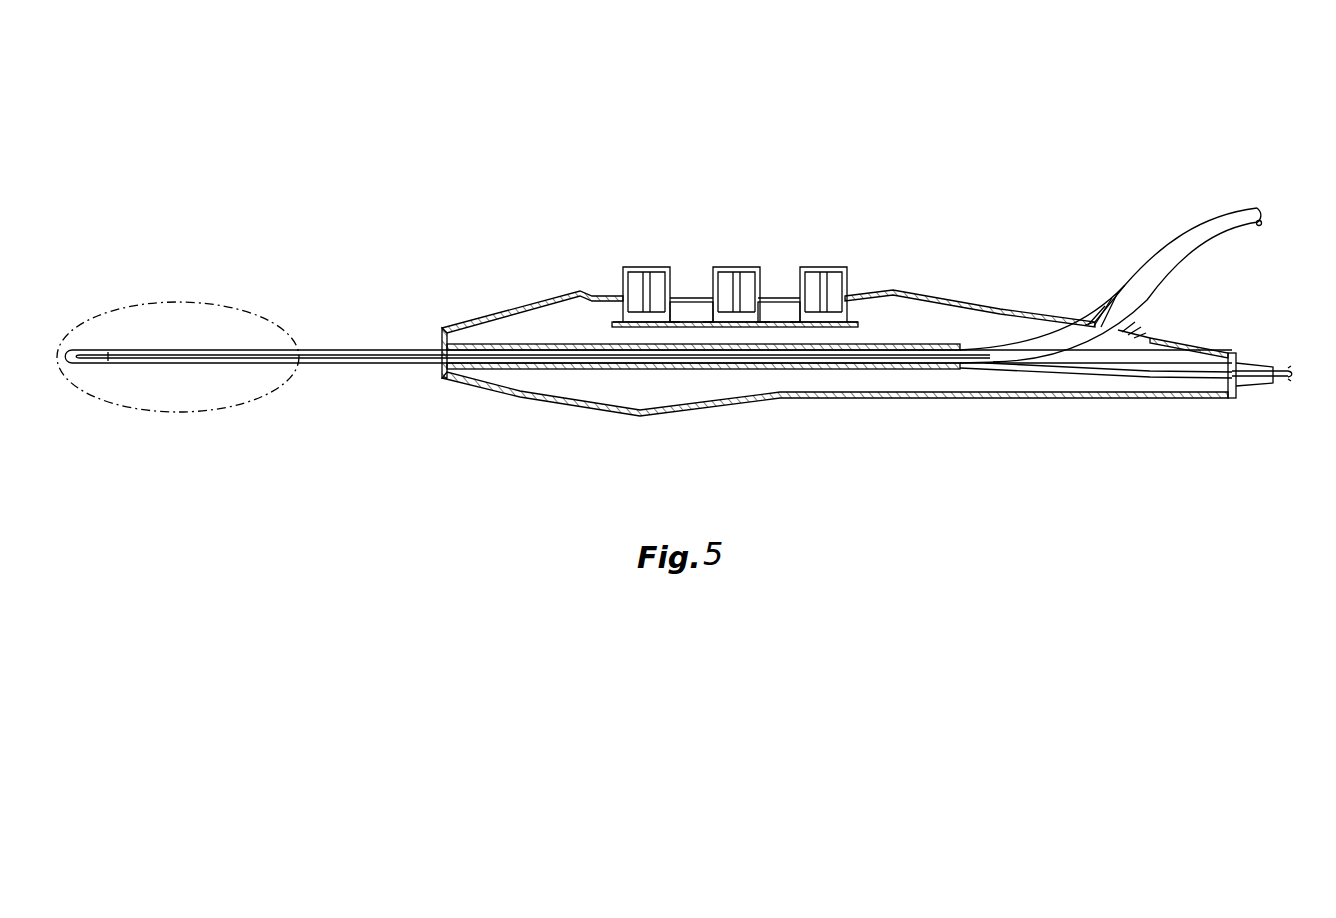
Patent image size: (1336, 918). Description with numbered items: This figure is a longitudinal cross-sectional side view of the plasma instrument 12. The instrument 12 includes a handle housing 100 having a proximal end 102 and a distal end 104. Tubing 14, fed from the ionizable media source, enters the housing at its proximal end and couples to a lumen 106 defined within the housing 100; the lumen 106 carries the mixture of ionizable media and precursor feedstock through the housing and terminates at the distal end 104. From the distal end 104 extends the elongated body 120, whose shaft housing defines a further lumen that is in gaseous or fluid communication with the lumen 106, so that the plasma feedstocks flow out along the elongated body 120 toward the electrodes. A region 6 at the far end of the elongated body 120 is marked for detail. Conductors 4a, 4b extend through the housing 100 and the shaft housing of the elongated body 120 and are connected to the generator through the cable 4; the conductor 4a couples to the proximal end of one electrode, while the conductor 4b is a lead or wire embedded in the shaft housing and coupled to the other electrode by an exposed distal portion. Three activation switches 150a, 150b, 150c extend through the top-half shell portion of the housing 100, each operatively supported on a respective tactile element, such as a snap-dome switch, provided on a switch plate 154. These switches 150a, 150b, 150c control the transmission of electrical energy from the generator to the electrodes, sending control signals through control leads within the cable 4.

The plasma instrument 12 is at (1096, 92).
The tubing 14 is at (1226, 208).
The cable 4 is at (1278, 366).
The conductor 4a is at (1188, 368).
The conductor 4b is at (1180, 392).
The detail region 6 is at (203, 301).
The handle housing 100 is at (922, 296).
The proximal end 102 is at (1226, 354).
The distal end 104 is at (465, 325).
The lumen 106 is at (851, 364).
The elongated body 120 is at (382, 368).
The activation switch 150a is at (638, 267).
The activation switch 150b is at (724, 267).
The activation switch 150c is at (812, 267).
The switch plate 154 is at (614, 332).